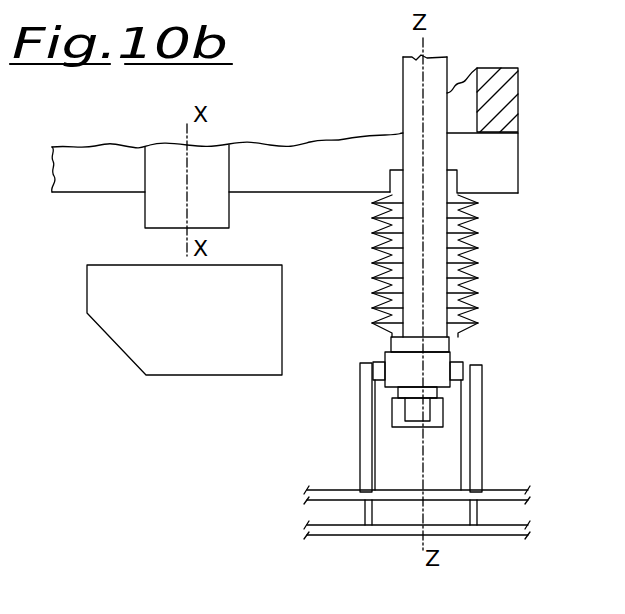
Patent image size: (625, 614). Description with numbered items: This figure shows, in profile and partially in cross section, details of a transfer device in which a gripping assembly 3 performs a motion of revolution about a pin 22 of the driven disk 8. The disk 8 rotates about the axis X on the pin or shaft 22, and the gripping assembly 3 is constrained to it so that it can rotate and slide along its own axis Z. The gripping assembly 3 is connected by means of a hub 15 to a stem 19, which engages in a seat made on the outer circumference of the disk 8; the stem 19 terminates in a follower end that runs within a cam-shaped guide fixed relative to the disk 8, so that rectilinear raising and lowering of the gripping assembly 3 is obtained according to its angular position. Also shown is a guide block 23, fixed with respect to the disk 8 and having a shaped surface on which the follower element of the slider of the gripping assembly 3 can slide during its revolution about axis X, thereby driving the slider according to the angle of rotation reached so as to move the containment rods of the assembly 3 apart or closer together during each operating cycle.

The gripping assembly 3 is at (502, 470).
The driven disk 8 is at (513, 78).
The hub 15 is at (438, 368).
The stem 19 is at (440, 154).
The pin or shaft 22 is at (160, 168).
The guide block 23 is at (132, 343).